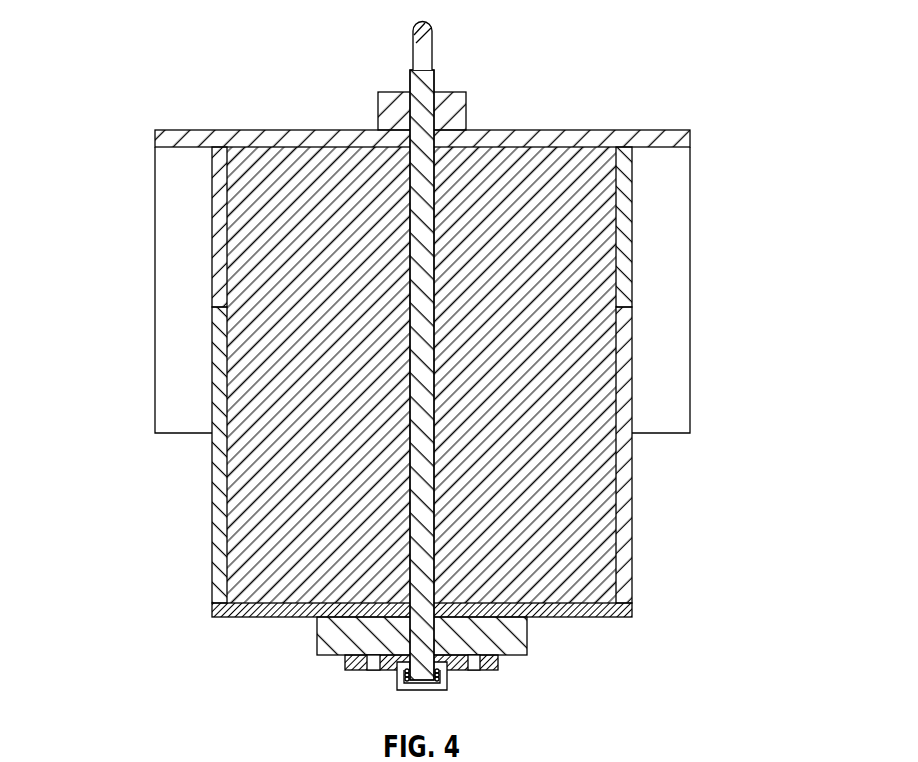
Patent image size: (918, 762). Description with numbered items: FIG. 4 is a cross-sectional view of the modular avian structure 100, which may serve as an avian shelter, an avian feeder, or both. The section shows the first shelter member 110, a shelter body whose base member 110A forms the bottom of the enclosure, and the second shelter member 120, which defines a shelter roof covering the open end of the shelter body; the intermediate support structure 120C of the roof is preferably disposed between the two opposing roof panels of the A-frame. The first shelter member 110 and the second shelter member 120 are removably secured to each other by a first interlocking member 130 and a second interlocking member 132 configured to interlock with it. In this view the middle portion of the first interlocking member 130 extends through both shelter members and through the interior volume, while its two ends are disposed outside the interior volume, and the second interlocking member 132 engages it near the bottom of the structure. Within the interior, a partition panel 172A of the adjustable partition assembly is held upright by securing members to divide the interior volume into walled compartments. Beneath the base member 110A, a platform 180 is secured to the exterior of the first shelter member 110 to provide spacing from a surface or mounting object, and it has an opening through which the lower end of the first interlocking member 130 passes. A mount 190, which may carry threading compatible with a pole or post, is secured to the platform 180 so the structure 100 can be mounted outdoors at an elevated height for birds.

The modular avian structure 100 is at (146, 42).
The first shelter member 110 is at (633, 535).
The base member 110A is at (270, 610).
The second shelter member 120 is at (572, 130).
The intermediate support structure 120C is at (633, 217).
The first interlocking member 130 is at (434, 55).
The second interlocking member 132 is at (425, 690).
The partition panel 172A is at (247, 347).
The platform 180 is at (528, 635).
The mount 190 is at (345, 662).